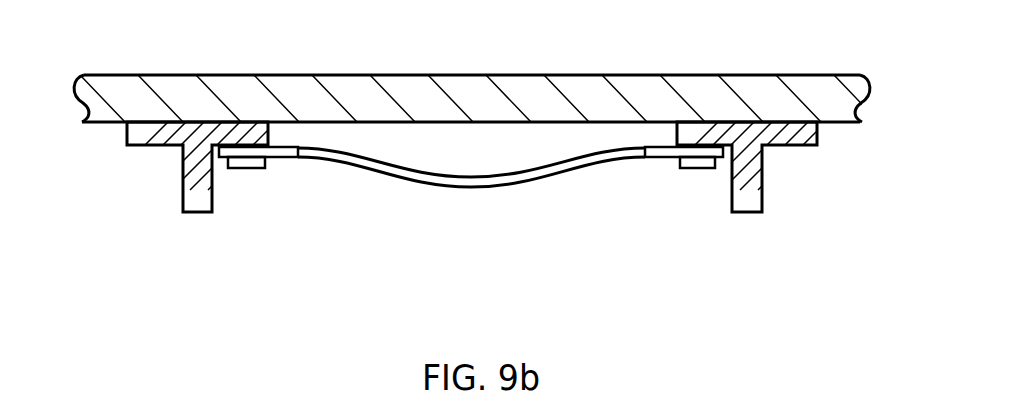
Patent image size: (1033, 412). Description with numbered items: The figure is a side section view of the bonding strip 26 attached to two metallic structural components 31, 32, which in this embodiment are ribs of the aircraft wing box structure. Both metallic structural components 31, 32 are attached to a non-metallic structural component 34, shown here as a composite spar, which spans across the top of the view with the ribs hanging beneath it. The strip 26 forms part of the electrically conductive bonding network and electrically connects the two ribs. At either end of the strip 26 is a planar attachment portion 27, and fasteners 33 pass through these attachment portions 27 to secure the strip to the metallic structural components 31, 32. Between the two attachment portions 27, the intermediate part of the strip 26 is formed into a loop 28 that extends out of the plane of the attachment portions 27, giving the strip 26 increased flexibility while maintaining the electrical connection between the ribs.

The non-metallic structural component 34 is at (580, 75).
The bonding strip 26 is at (492, 209).
The metallic structural component 31 is at (183, 185).
The metallic structural component 32 is at (762, 179).
The planar attachment portion 27 is at (273, 158).
The fastener 33 is at (253, 169).
The loop 28 is at (435, 186).